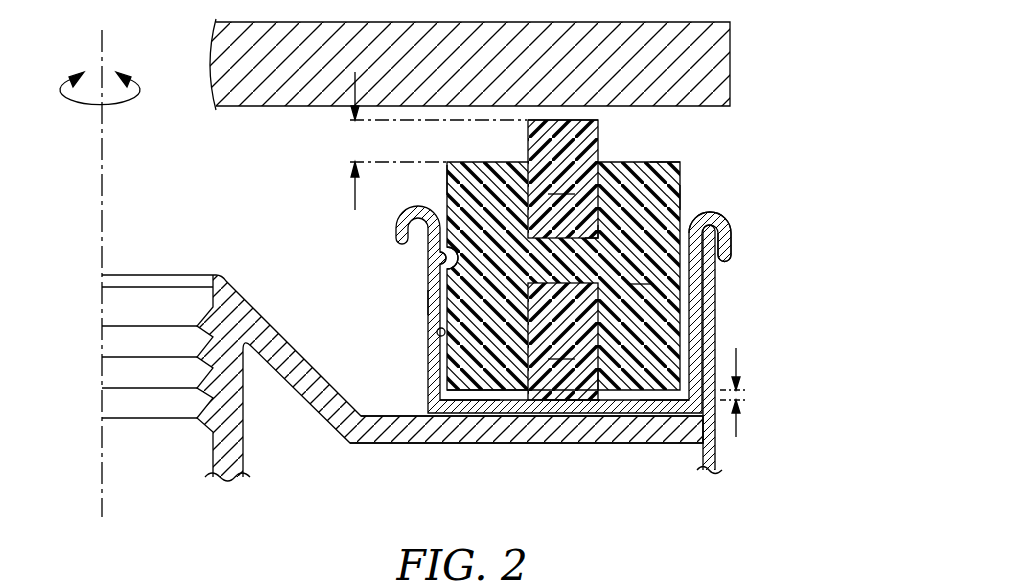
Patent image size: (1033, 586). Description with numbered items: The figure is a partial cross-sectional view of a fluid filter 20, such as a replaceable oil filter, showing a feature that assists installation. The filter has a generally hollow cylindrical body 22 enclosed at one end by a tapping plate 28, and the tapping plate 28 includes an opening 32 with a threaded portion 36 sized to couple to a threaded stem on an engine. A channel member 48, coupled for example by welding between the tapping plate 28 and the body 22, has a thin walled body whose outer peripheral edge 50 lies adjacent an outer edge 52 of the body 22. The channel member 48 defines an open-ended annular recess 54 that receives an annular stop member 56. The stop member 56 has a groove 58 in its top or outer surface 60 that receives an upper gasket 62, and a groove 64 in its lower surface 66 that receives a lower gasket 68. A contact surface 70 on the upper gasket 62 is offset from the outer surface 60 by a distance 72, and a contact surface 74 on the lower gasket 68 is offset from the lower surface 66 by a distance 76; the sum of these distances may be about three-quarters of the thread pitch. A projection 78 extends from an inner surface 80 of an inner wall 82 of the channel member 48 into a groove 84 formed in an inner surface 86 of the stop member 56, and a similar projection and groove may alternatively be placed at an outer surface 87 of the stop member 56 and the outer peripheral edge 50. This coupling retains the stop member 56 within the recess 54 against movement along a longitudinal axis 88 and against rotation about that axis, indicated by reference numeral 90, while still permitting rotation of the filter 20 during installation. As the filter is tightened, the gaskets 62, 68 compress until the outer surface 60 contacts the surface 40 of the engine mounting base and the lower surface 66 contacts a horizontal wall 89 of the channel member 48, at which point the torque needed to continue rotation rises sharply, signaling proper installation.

The fluid filter 20 is at (768, 433).
The cylindrical body 22 is at (716, 452).
The tapping plate 28 is at (533, 445).
The opening 32 is at (164, 243).
The threaded portion 36 is at (211, 370).
The surface 40 is at (285, 108).
The channel member 48 is at (427, 372).
The outer peripheral edge 50 is at (698, 283).
The outer edge 52 is at (716, 313).
The annular recess 54 is at (664, 402).
The stop member 56 is at (565, 260).
The groove 58 is at (599, 235).
The outer surface 60 is at (661, 160).
The upper gasket 62 is at (563, 179).
The groove 64 is at (598, 380).
The lower surface 66 is at (473, 392).
The lower gasket 68 is at (563, 341).
The contact surface 70 is at (597, 121).
The distance 72 is at (353, 197).
The contact surface 74 is at (573, 400).
The distance 76 is at (738, 393).
The projection 78 is at (446, 258).
The inner surface 80 is at (437, 332).
The inner wall 82 is at (428, 300).
The groove 84 is at (452, 257).
The inner surface 86 is at (447, 180).
The outer surface 87 is at (682, 197).
The longitudinal axis 88 is at (103, 42).
The horizontal wall 89 is at (460, 405).
The rotation about the longitudinal axis 90 is at (78, 103).